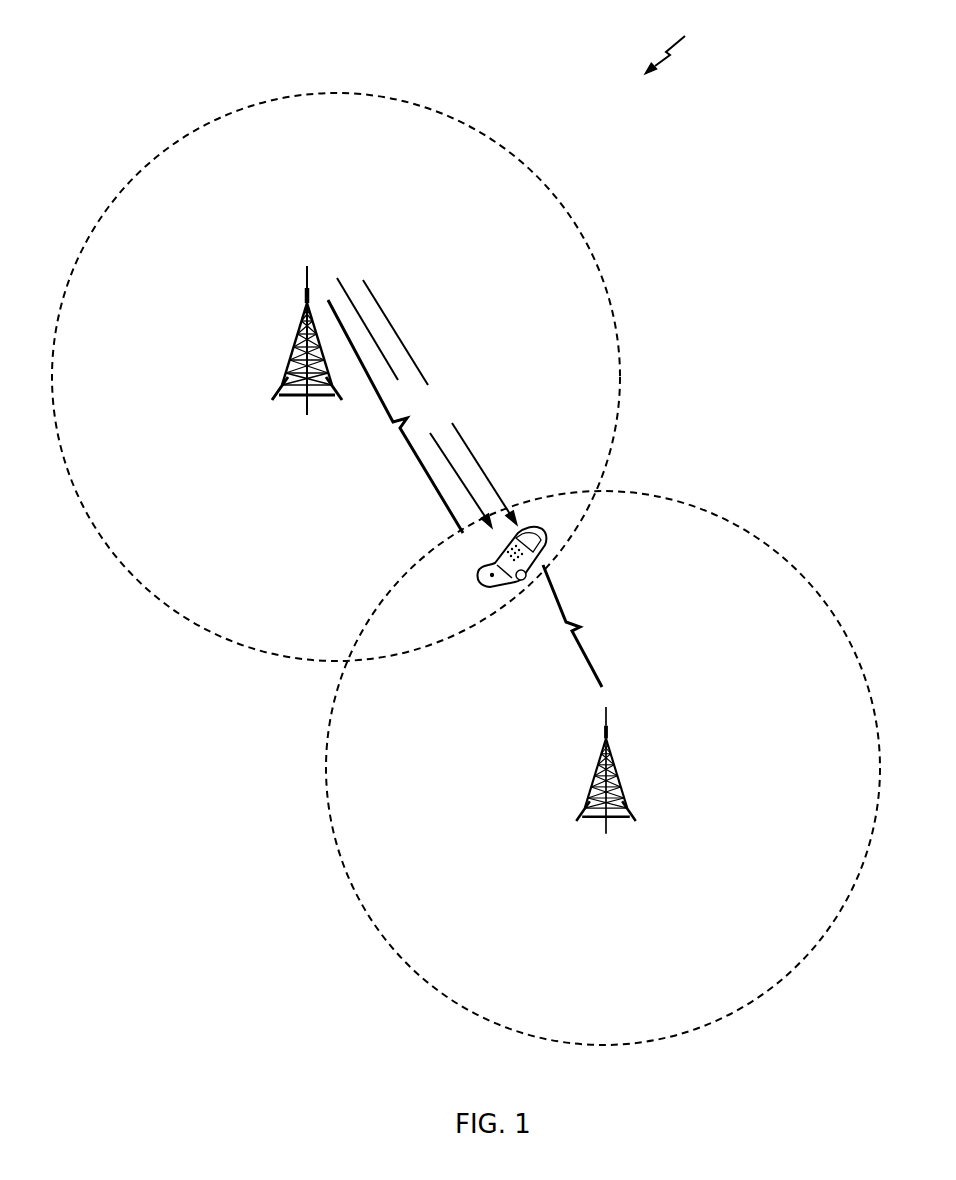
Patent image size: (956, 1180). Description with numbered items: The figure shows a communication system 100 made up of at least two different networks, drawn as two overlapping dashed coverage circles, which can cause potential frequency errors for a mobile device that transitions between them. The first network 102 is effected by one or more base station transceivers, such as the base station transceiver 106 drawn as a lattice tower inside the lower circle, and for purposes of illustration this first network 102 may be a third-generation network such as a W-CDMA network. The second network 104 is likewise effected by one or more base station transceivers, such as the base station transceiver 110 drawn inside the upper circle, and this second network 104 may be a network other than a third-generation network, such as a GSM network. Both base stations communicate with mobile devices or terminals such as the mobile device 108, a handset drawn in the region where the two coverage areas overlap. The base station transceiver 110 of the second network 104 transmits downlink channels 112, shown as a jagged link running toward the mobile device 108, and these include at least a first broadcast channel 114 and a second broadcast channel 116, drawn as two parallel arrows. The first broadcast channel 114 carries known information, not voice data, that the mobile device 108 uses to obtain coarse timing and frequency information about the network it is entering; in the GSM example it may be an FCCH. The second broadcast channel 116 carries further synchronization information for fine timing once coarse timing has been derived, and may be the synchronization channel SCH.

The communication system 100 is at (682, 45).
The first network 102 is at (603, 1045).
The second network 104 is at (357, 93).
The base station transceiver 106 is at (606, 835).
The mobile device 108 is at (493, 594).
The base station transceiver 110 is at (293, 396).
The downlink channels 112 is at (417, 470).
The first broadcast channel 114 is at (342, 288).
The second broadcast channel 116 is at (414, 357).